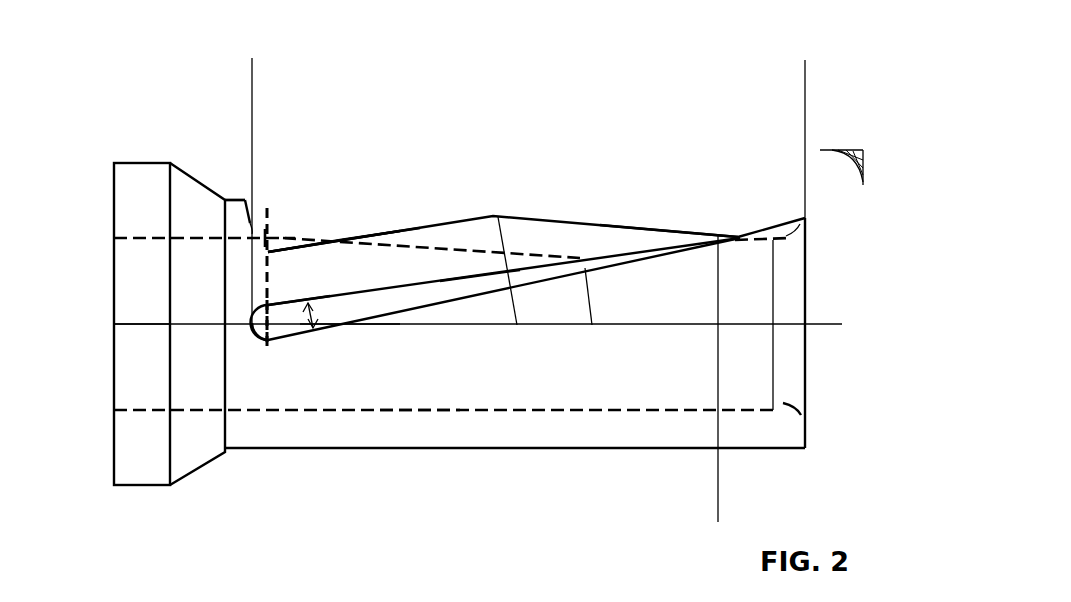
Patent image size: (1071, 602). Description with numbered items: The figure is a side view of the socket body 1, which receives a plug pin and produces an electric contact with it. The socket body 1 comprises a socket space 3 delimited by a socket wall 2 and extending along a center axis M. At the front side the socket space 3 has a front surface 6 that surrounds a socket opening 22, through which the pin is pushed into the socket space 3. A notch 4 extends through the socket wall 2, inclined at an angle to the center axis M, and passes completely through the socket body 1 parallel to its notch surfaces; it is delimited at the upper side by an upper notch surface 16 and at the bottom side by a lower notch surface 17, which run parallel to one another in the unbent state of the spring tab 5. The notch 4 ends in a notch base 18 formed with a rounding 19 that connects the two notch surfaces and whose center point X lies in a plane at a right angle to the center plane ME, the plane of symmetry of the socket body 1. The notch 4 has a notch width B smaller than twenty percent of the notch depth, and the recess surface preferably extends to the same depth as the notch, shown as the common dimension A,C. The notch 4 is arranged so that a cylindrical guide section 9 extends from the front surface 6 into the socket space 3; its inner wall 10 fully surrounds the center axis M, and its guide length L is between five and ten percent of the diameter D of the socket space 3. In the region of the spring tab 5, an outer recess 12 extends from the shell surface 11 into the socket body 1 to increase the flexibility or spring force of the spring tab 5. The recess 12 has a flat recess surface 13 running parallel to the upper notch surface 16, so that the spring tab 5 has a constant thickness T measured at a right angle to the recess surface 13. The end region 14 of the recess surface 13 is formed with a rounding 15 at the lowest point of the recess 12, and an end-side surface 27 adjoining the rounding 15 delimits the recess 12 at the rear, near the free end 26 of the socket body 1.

The socket body 1 is at (530, 449).
The socket wall 2 is at (657, 411).
The socket space 3 is at (790, 395).
The notch 4 is at (421, 292).
The spring tab 5 is at (512, 228).
The front surface 6 is at (806, 257).
The guide section 9 is at (743, 232).
The inner wall 10 is at (420, 411).
The shell surface 11 is at (577, 218).
The outer recess 12 is at (355, 240).
The recess surface 13 is at (328, 242).
The end region 14 is at (285, 283).
The rounding 15 is at (265, 230).
The upper notch surface 16 is at (378, 233).
The lower notch surface 17 is at (345, 326).
The notch base 18 is at (252, 340).
The rounding 19 is at (262, 337).
The socket opening 22 is at (806, 355).
The free end 26 is at (666, 238).
The end-side surface 27 is at (169, 165).
The depth and notch depth A,C is at (253, 70).
The notch width B is at (306, 302).
The diameter D is at (743, 409).
The guide length L is at (804, 518).
The center axis M is at (140, 323).
The center plane ME is at (828, 148).
The thickness T is at (333, 243).
The center point X is at (267, 343).